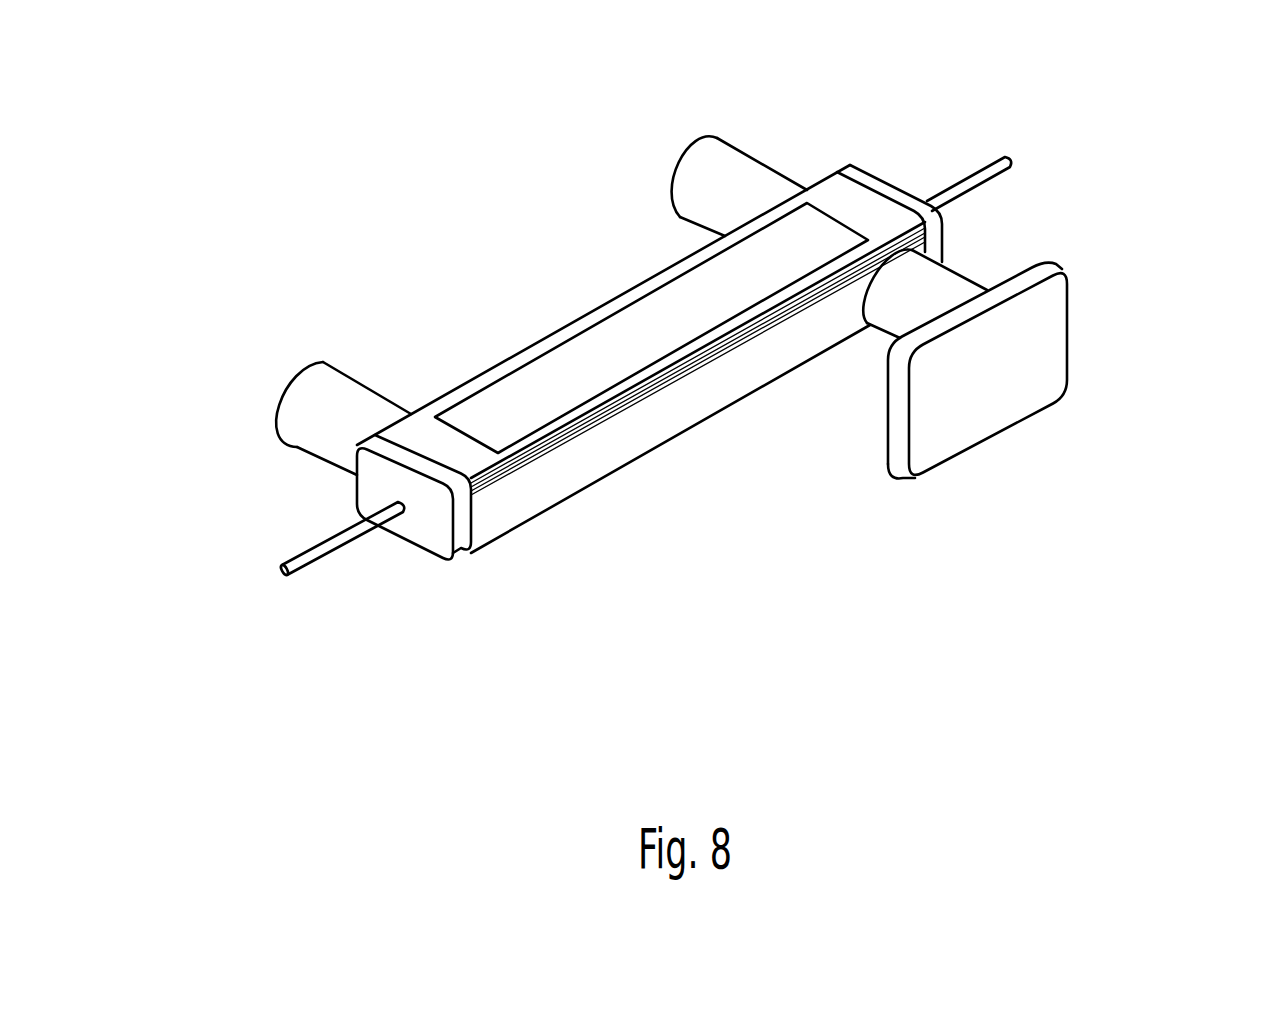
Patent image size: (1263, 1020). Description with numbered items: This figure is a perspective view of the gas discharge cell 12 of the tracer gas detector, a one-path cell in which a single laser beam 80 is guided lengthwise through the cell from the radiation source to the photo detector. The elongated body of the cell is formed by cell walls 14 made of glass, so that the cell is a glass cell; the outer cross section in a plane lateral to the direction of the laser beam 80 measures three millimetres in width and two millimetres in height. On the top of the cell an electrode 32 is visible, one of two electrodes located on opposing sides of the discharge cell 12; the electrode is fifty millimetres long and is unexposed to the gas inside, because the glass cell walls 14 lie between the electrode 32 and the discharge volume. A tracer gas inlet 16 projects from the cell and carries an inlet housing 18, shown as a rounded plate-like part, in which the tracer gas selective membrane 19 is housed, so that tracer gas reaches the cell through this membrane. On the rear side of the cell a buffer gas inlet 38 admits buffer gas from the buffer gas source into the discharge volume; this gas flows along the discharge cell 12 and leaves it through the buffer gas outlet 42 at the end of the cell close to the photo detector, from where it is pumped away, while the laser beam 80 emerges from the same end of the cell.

The gas discharge cell 12 is at (537, 583).
The cell walls 14 is at (598, 460).
The tracer gas inlet 16 is at (935, 285).
The inlet housing 18 is at (1078, 272).
The tracer gas selective membrane 19 is at (1025, 360).
The electrode 32 is at (535, 385).
The buffer gas inlet 38 is at (737, 170).
The buffer gas outlet 42 is at (317, 418).
The laser beam 80 is at (335, 543).